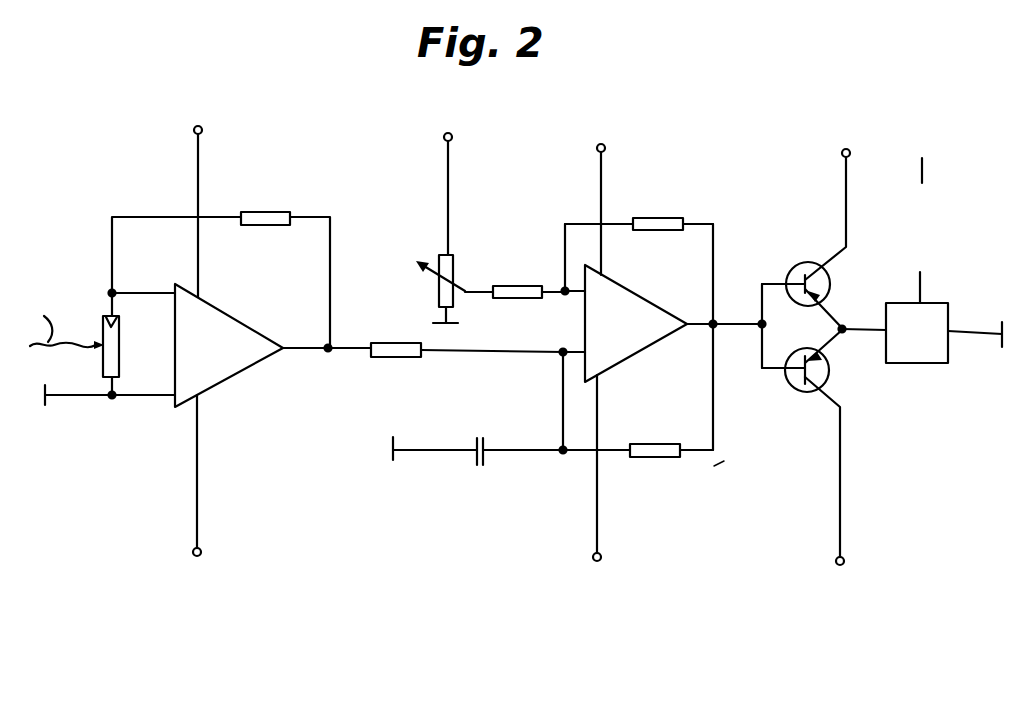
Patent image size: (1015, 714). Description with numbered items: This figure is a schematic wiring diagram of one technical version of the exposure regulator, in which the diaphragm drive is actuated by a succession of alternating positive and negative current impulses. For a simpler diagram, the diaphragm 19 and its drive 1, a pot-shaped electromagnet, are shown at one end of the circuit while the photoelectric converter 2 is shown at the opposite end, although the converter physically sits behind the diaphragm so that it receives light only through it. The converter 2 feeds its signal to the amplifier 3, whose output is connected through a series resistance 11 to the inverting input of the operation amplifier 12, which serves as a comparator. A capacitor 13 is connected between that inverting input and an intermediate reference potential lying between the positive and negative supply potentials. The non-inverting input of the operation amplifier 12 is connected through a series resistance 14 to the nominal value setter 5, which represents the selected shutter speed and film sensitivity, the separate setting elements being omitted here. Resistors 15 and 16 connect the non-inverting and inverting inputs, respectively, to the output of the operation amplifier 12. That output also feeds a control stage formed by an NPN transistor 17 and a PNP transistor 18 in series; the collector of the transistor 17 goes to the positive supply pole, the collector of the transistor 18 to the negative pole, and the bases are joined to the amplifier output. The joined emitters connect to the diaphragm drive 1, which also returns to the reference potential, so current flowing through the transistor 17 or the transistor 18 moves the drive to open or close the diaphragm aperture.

The diaphragm drive 1 is at (928, 368).
The photoelectric converter 2 is at (102, 339).
The amplifier 3 is at (233, 378).
The nominal value setter 5 is at (450, 262).
The series resistance 11 is at (383, 358).
The operation amplifier 12 is at (647, 306).
The capacitor 13 is at (477, 468).
The series resistance 14 is at (517, 300).
The resistor 15 is at (660, 222).
The resistor 16 is at (667, 458).
The NPN transistor 17 is at (798, 264).
The PNP transistor 18 is at (798, 392).
The diaphragm 19 is at (922, 172).